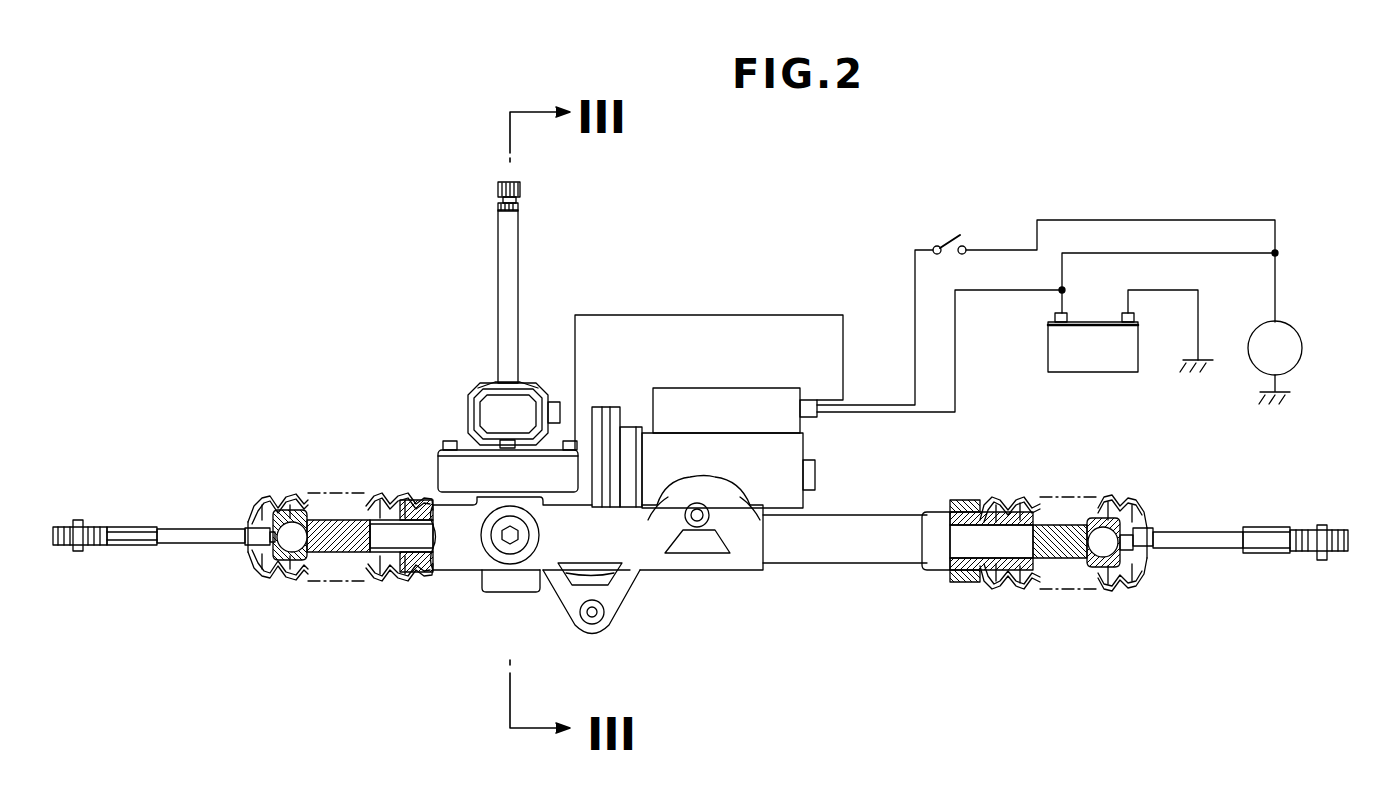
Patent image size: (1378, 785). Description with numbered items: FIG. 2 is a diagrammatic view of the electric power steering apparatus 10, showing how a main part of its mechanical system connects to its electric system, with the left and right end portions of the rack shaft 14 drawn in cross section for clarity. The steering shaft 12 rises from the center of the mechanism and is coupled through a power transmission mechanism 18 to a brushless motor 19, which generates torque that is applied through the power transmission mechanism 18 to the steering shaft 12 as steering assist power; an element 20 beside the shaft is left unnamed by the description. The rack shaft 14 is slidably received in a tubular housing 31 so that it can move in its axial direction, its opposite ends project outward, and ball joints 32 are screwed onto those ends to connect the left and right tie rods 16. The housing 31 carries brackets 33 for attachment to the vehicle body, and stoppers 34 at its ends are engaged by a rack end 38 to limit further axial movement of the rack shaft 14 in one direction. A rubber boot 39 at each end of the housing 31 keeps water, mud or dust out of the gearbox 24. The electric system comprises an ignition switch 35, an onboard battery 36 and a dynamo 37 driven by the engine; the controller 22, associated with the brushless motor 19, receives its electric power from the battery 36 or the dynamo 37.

The electric power steering apparatus 10 is at (465, 335).
The steering shaft 12 is at (512, 263).
The rack shaft 14 is at (967, 545).
The tie rod 16 is at (223, 537).
The power transmission mechanism 18 is at (448, 470).
The brushless motor 19 is at (812, 505).
The torque sensor 20 is at (485, 415).
The controller 22 is at (700, 405).
The gearbox 24 is at (543, 596).
The tubular housing 31 is at (727, 565).
The bracket 33 is at (697, 527).
The ball joint 32 is at (307, 555).
The stopper 34 is at (417, 582).
The ignition switch 35 is at (952, 238).
The onboard battery 36 is at (1102, 372).
The dynamo 37 is at (1302, 345).
The rack end 38 is at (330, 557).
The rubber boot 39 is at (387, 497).